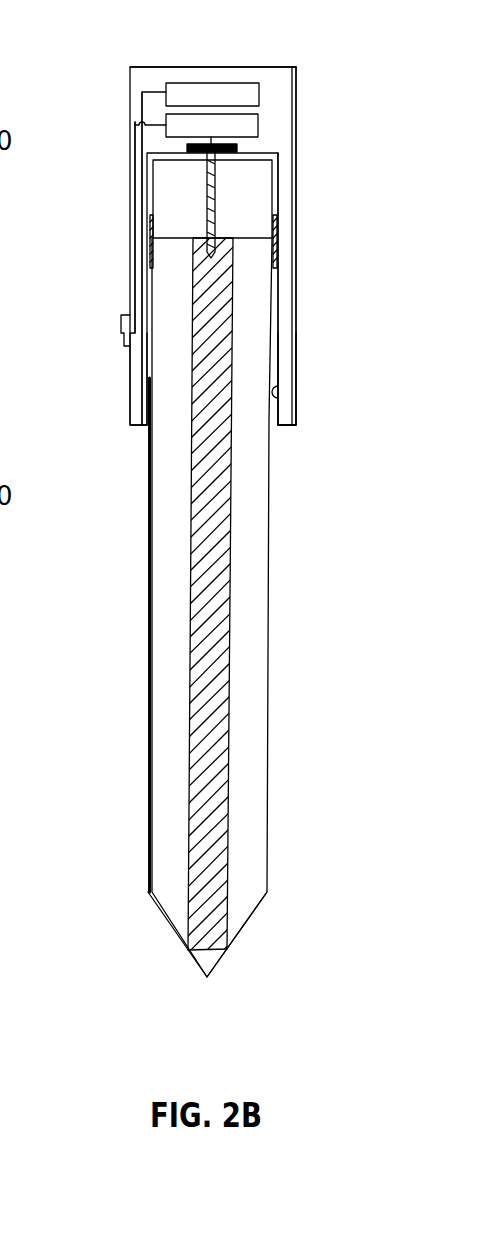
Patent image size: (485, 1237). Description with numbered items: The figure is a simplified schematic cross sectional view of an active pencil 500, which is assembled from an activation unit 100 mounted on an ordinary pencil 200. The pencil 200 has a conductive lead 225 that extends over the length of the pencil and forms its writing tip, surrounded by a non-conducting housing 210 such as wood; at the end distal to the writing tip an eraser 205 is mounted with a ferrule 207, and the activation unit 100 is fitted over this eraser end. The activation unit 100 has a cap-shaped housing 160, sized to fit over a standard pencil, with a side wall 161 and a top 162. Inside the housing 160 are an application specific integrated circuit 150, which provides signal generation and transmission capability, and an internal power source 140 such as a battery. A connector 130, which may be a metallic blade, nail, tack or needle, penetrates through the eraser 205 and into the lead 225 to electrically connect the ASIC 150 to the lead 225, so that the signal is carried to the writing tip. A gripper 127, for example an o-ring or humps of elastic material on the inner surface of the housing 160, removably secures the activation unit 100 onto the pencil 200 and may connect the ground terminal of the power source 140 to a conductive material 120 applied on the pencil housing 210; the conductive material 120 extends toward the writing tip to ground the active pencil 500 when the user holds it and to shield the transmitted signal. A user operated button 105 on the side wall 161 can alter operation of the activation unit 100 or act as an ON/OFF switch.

The activation unit 100 is at (104, 103).
The top of housing 162 is at (210, 66).
The internal power source 140 is at (223, 83).
The application specific integration circuit (ASIC) 150 is at (259, 128).
The eraser 205 is at (281, 158).
The connector 130 is at (215, 202).
The ferrule 207 is at (275, 255).
The housing 160 is at (297, 313).
The gripper 127 is at (278, 392).
The side wall 161 is at (130, 275).
The button 105 is at (123, 330).
The pencil 200 is at (292, 602).
The housing of pencil 210 is at (268, 515).
The lead 225 is at (190, 602).
The conductive material 120 is at (148, 810).
The active pencil 500 is at (134, 565).